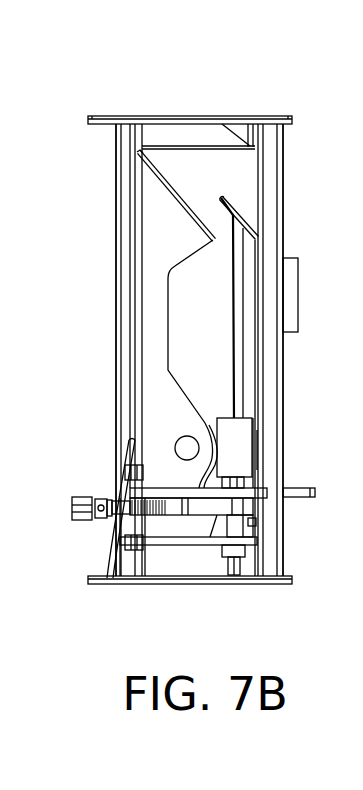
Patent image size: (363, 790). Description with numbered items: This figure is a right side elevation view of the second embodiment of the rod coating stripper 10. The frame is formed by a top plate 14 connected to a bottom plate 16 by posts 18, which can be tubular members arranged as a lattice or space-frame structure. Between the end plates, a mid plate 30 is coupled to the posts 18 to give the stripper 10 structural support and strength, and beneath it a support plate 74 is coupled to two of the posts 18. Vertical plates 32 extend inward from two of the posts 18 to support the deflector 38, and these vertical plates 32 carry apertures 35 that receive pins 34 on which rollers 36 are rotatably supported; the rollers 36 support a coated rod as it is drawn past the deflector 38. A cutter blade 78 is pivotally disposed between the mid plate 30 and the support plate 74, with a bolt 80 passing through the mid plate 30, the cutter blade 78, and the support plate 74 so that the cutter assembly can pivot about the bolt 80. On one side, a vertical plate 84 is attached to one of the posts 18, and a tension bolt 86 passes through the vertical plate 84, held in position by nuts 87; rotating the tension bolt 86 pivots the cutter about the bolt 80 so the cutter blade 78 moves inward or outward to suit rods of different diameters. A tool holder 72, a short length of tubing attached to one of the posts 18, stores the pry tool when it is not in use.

The rod coating stripper 10 is at (160, 68).
The top plate 14 is at (270, 116).
The bottom plate 16 is at (270, 582).
The posts 18 is at (115, 153).
The mid plate 30 is at (298, 487).
The vertical plates 32 is at (157, 222).
The pins 34 is at (190, 437).
The apertures 35 is at (185, 442).
The rollers 36 is at (228, 418).
The deflector 38 is at (230, 173).
The tool holder 72 is at (298, 286).
The support plate 74 is at (197, 540).
The cutter blade 78 is at (253, 525).
The bolt 80 is at (238, 565).
The vertical plate 84 is at (125, 463).
The tension bolt 86 is at (145, 550).
The nuts 87 is at (112, 542).